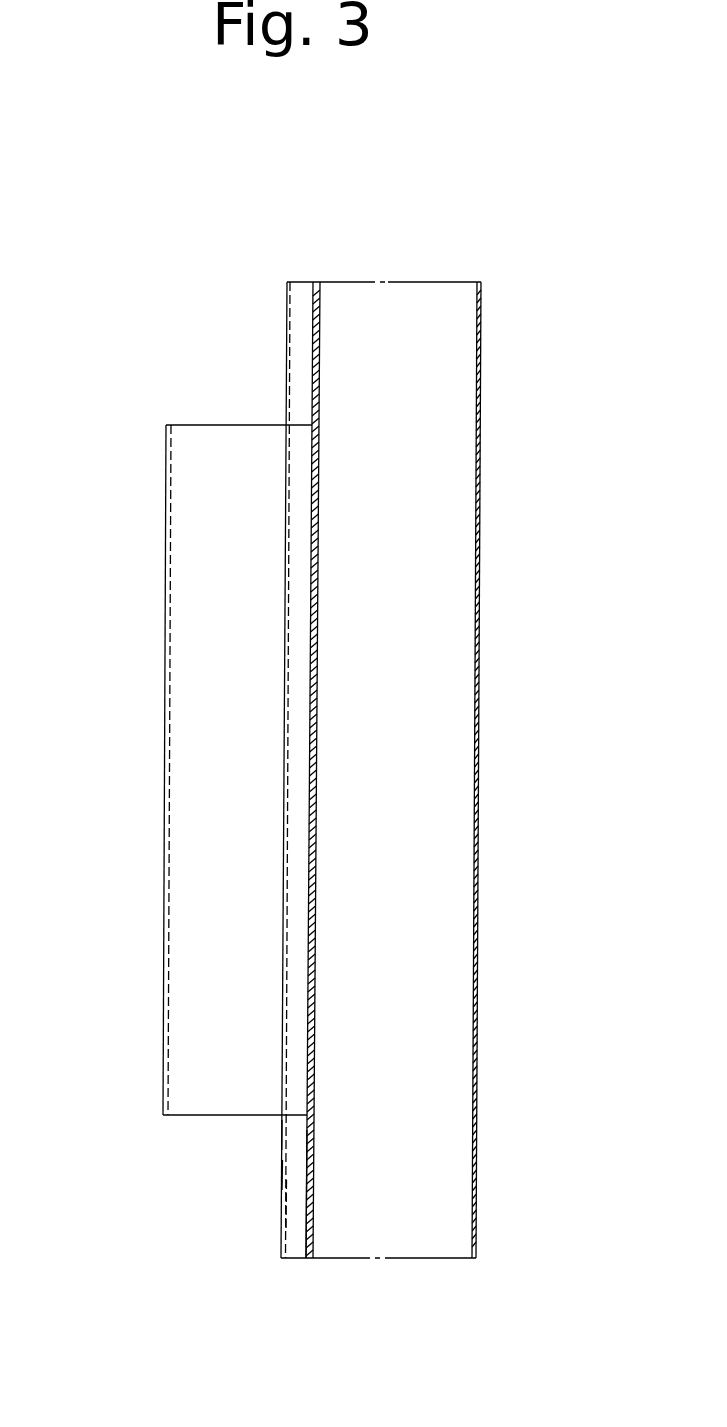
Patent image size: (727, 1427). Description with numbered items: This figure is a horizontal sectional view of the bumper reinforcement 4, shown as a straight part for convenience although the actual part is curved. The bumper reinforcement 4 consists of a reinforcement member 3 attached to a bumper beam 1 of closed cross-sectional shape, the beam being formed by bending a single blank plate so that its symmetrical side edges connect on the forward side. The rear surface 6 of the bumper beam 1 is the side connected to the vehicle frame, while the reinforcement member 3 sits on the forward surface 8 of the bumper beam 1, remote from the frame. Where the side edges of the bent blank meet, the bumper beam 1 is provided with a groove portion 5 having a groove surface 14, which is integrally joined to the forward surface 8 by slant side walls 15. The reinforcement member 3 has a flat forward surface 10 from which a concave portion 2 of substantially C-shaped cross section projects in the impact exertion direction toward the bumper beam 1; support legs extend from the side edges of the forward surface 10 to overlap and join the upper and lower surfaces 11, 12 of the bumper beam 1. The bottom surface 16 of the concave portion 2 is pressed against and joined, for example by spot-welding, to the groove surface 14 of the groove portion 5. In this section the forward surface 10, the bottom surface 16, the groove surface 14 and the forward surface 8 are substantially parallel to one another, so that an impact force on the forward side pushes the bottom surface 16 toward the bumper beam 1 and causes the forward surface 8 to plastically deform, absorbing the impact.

The bumper beam 1 is at (383, 315).
The concave portion 2 is at (197, 792).
The reinforcement member 3 is at (232, 447).
The bumper reinforcement 4 is at (370, 203).
The groove portion 5 is at (298, 1137).
The rear surface 6 is at (477, 1138).
The forward surface of the bumper beam 8 is at (281, 1175).
The forward surface of the reinforcement member 10 is at (163, 1056).
The upper surface of the bumper beam 11 is at (397, 1028).
The lower surface of the bumper beam 12 is at (508, 770).
The groove surface 14 is at (308, 1222).
The slant side wall 15 is at (296, 1196).
The bottom surface of the concave portion 16 is at (307, 1010).